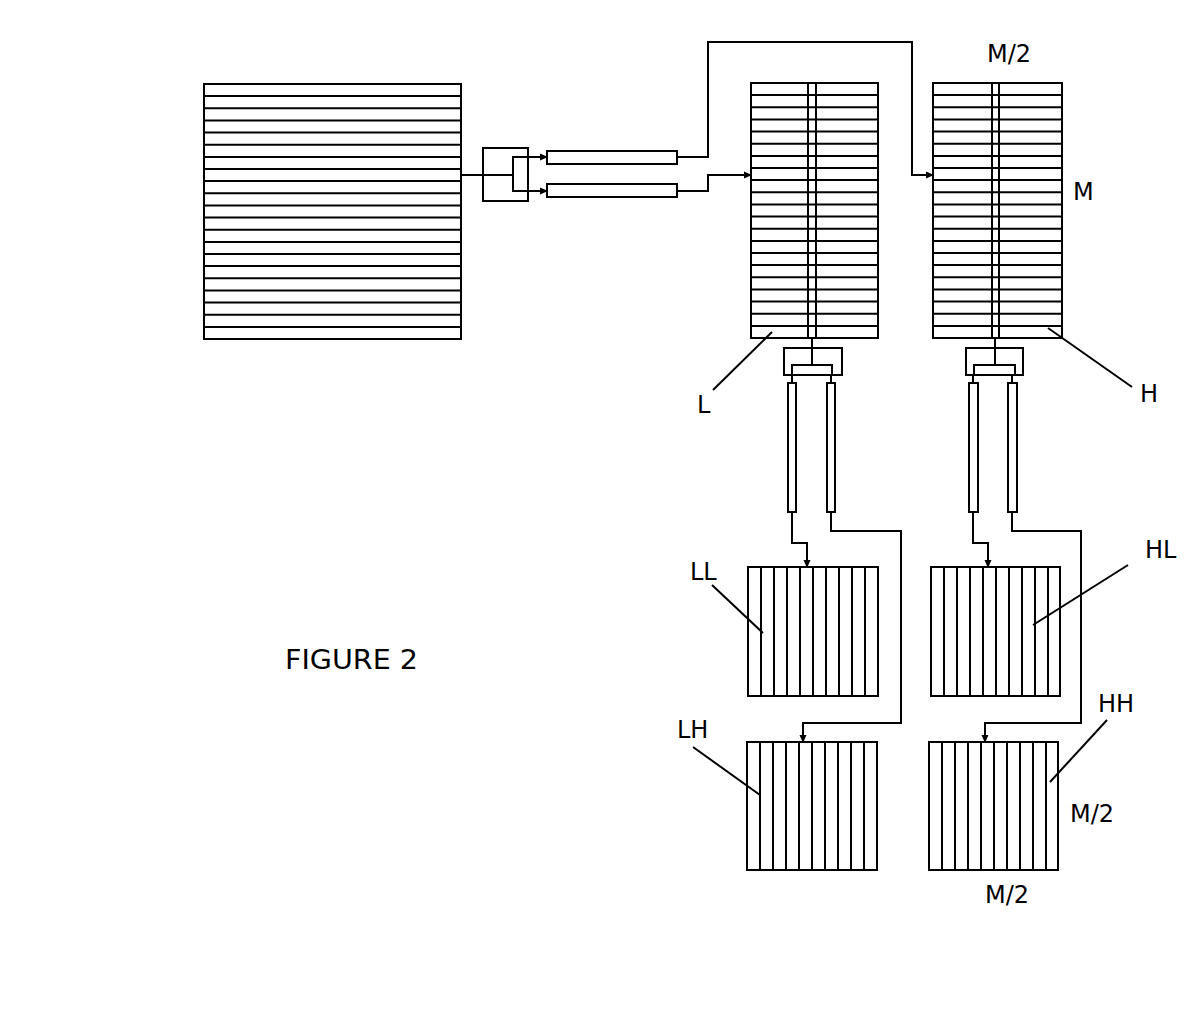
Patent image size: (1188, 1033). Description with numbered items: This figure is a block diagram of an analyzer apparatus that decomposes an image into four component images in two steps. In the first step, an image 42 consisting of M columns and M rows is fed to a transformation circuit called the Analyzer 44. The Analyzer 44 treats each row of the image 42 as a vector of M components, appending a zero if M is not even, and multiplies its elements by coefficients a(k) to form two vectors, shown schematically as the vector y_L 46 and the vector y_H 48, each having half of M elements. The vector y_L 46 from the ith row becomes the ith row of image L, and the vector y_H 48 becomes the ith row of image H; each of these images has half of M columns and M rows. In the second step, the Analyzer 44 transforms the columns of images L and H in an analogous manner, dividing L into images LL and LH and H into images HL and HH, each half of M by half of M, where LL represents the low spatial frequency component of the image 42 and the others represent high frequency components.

The image 42 is at (237, 320).
The analyzer 44 is at (500, 193).
The vector y_L 46 is at (582, 193).
The vector y_H 48 is at (573, 157).